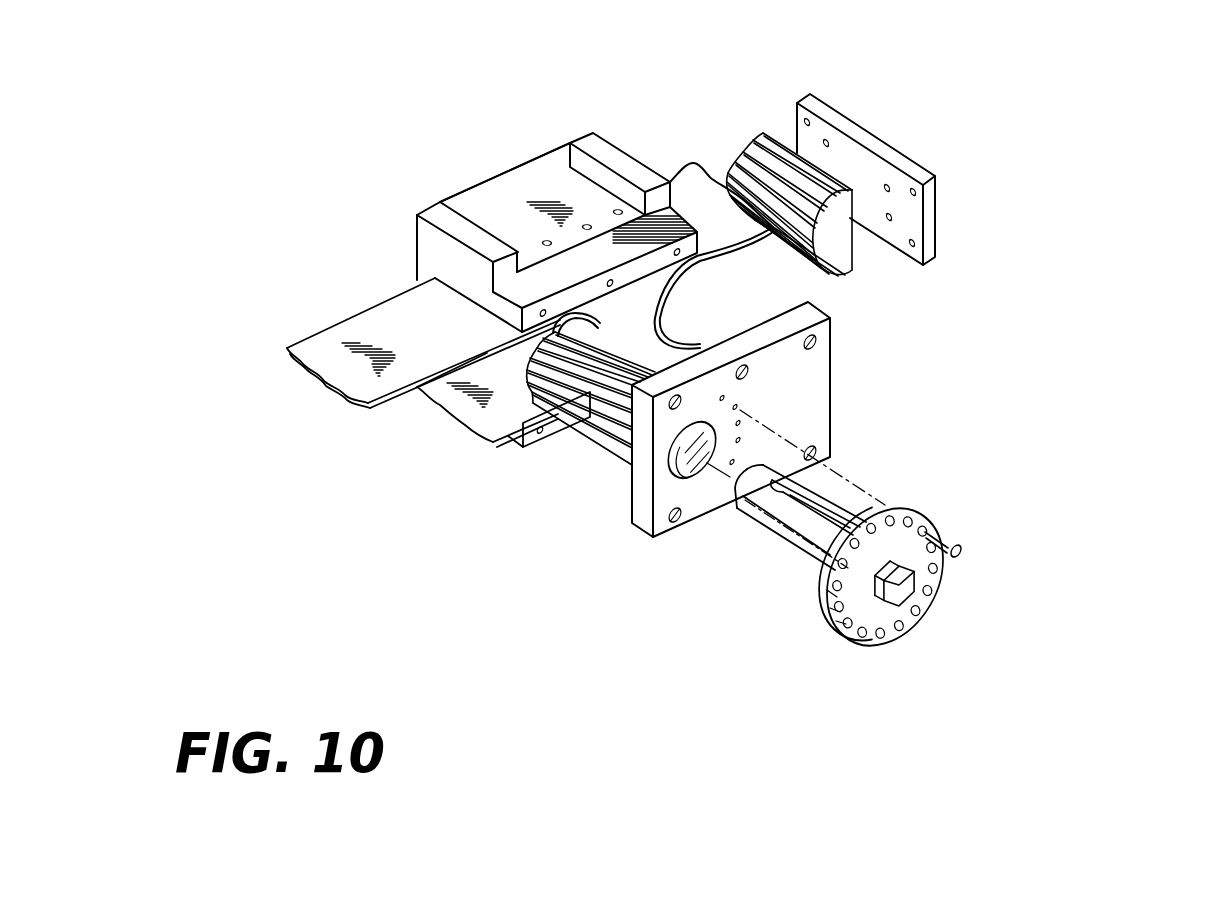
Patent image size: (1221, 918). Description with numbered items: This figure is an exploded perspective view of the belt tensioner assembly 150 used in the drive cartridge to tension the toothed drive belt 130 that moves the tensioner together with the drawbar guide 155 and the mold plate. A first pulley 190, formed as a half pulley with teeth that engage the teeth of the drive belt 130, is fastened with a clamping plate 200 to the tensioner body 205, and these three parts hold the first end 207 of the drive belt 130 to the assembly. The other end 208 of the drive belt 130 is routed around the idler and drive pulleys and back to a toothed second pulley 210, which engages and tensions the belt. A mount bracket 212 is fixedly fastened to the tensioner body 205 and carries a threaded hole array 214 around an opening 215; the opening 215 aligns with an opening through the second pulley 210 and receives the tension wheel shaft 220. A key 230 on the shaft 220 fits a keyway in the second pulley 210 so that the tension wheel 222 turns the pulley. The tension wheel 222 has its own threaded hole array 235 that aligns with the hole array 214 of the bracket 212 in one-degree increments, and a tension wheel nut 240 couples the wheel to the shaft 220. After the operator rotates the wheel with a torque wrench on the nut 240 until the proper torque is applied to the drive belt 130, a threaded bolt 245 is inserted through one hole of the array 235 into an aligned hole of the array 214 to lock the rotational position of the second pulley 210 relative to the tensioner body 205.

The drive belt 130 is at (541, 305).
The belt tensioner assembly 150 is at (1092, 301).
The drawbar guide 155 is at (507, 215).
The first pulley 190 is at (848, 187).
The clamping plate 200 is at (853, 125).
The tensioner body 205 is at (546, 178).
The first end of the drive belt 207 is at (677, 168).
The second end of the drive belt 208 is at (318, 348).
The second pulley 210 is at (572, 433).
The mount bracket 212 is at (641, 457).
The threaded hole array 214 is at (743, 405).
The opening 215 is at (696, 480).
The tension wheel shaft 220 is at (793, 505).
The tension wheel 222 is at (921, 632).
The key 230 is at (780, 500).
The threaded hole array 235 is at (867, 640).
The tension wheel nut 240 is at (905, 587).
The threaded bolt 245 is at (961, 546).